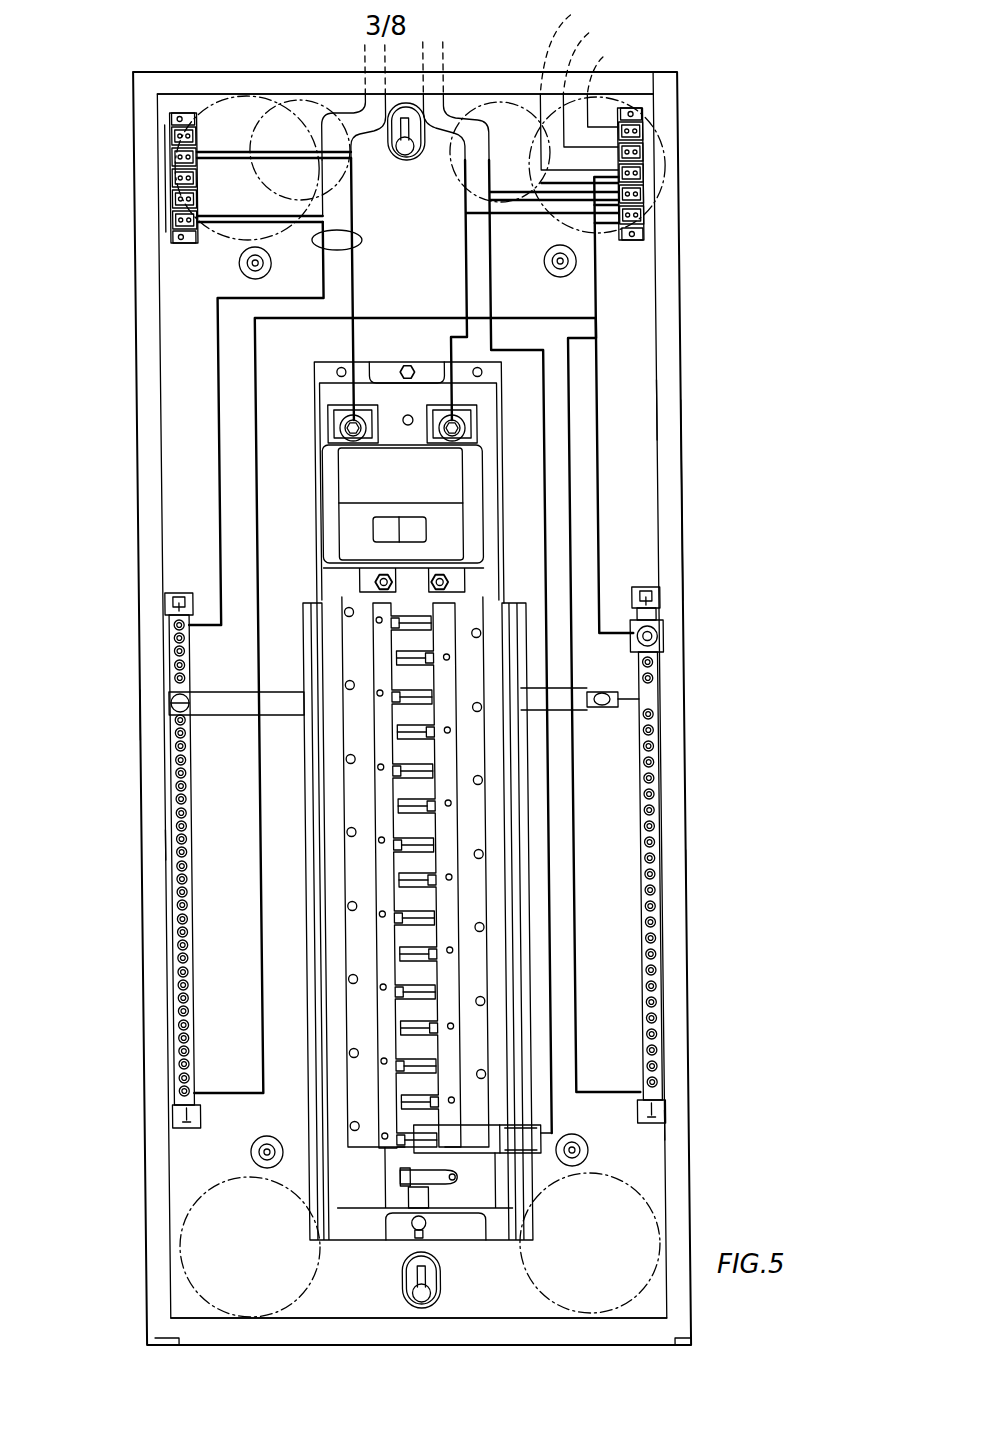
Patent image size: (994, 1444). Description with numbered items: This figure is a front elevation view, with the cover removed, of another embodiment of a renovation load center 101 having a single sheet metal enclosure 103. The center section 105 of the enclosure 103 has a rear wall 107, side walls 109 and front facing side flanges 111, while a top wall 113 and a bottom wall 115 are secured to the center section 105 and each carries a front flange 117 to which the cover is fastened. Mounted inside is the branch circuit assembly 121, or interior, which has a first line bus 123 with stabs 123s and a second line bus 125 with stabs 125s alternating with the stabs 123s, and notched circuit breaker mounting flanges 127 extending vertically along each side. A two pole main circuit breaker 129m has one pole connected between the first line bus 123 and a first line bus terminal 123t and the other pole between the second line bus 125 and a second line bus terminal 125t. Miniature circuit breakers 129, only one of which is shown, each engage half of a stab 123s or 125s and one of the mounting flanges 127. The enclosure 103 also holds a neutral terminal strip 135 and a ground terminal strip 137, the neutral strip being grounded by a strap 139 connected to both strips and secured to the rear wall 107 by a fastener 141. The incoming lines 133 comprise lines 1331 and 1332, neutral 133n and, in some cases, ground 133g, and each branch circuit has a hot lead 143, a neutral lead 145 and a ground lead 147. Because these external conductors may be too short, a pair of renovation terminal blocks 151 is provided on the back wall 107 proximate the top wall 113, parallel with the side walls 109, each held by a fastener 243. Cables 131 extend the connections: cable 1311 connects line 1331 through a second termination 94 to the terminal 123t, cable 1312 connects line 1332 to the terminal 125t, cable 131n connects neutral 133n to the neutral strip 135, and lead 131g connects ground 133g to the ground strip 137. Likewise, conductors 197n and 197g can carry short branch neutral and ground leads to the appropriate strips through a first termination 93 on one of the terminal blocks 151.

The first termination 93 is at (168, 132).
The second termination 94 is at (170, 150).
The renovation load center 101 is at (123, 363).
The enclosure 103 is at (705, 480).
The center section 105 is at (625, 568).
The rear wall 107 is at (640, 410).
The side walls 109 is at (142, 725).
The front facing side flanges 111 is at (142, 848).
The top wall 113 is at (172, 70).
The bottom wall 115 is at (207, 1340).
The front flange 117 is at (220, 82).
The branch circuit assembly 121 is at (290, 360).
The first line bus 123 is at (376, 1000).
The stabs 123s is at (396, 956).
The first line bus terminal 123t is at (340, 425).
The second line bus 125 is at (460, 880).
The stabs 125s is at (445, 951).
The second line bus terminal 125t is at (462, 418).
The circuit breaker mounting flanges 127 is at (316, 1052).
The miniature circuit breaker 129 is at (467, 1156).
The main circuit breaker 129m is at (352, 487).
The cable 131 is at (315, 240).
The cable 1311 is at (353, 307).
The cable 1312 is at (463, 294).
The cable 131n is at (512, 278).
The lead 131g is at (220, 541).
The incoming lines 133 is at (330, 44).
The incoming line 1331 is at (363, 50).
The incoming line 1332 is at (429, 44).
The ground conductor 133g is at (362, 62).
The neutral 133n is at (447, 62).
The neutral terminal strip 135 is at (662, 782).
The ground terminal strip 137 is at (188, 774).
The strap 139 is at (218, 700).
The fastener 141 is at (603, 692).
The hot lead 143 is at (592, 46).
The neutral lead 145 is at (605, 60).
The ground lead 147 is at (548, 52).
The renovation terminal blocks 151 is at (158, 258).
The conductor 197g is at (513, 317).
The conductor 197n is at (590, 340).
The fastener 243 is at (196, 243).